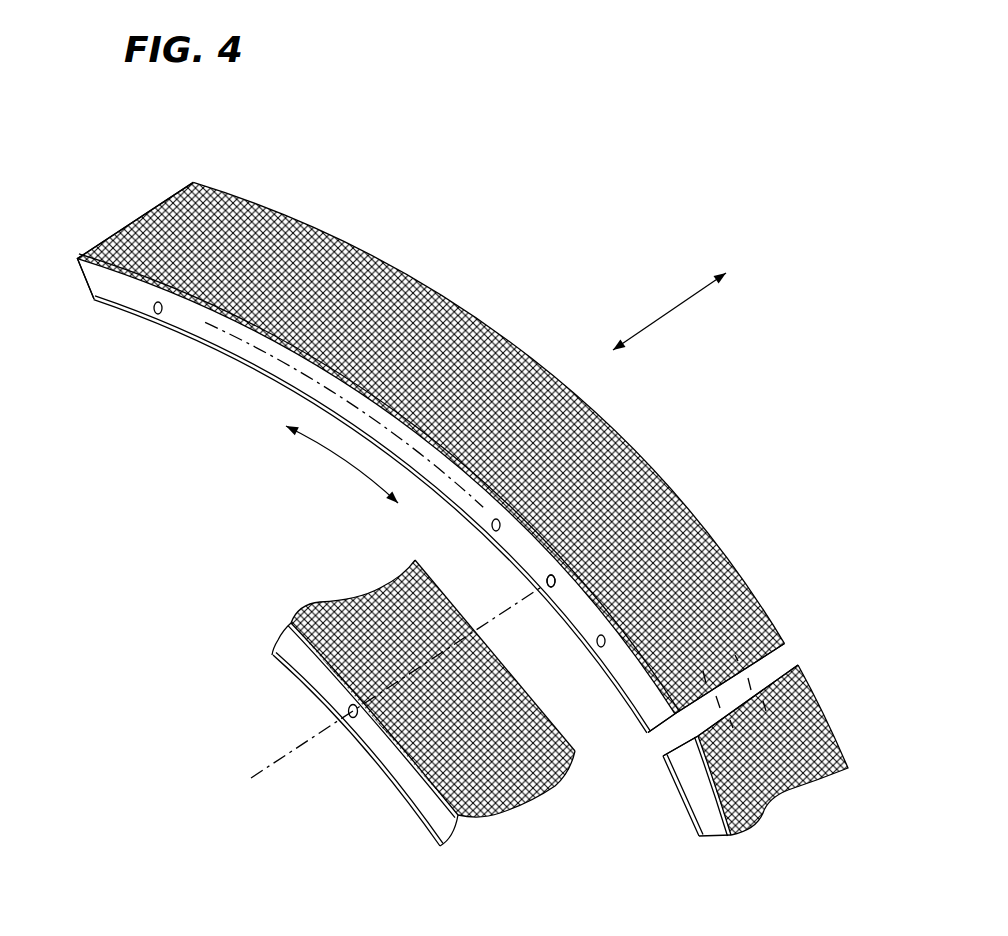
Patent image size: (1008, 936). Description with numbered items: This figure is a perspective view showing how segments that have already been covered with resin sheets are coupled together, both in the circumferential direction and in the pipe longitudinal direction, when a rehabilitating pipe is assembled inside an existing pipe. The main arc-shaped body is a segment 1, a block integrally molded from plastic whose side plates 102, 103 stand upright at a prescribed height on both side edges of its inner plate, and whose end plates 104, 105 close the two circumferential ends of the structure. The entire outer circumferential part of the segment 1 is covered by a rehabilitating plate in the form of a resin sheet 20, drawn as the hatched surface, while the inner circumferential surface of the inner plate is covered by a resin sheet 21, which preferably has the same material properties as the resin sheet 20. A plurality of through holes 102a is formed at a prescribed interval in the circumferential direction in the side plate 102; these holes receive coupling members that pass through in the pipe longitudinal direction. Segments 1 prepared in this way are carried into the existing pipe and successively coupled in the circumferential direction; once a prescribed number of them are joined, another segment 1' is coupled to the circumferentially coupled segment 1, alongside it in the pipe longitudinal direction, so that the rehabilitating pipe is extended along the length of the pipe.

The segment 1 is at (462, 542).
The another segment 1' is at (423, 722).
The resin sheet 20 is at (617, 461).
The resin sheet 21 is at (235, 355).
The side plate 102 is at (187, 320).
The through hole 102a is at (545, 582).
The side plate 103 is at (383, 257).
The end plate 104 is at (117, 221).
The end plate 105 is at (777, 637).